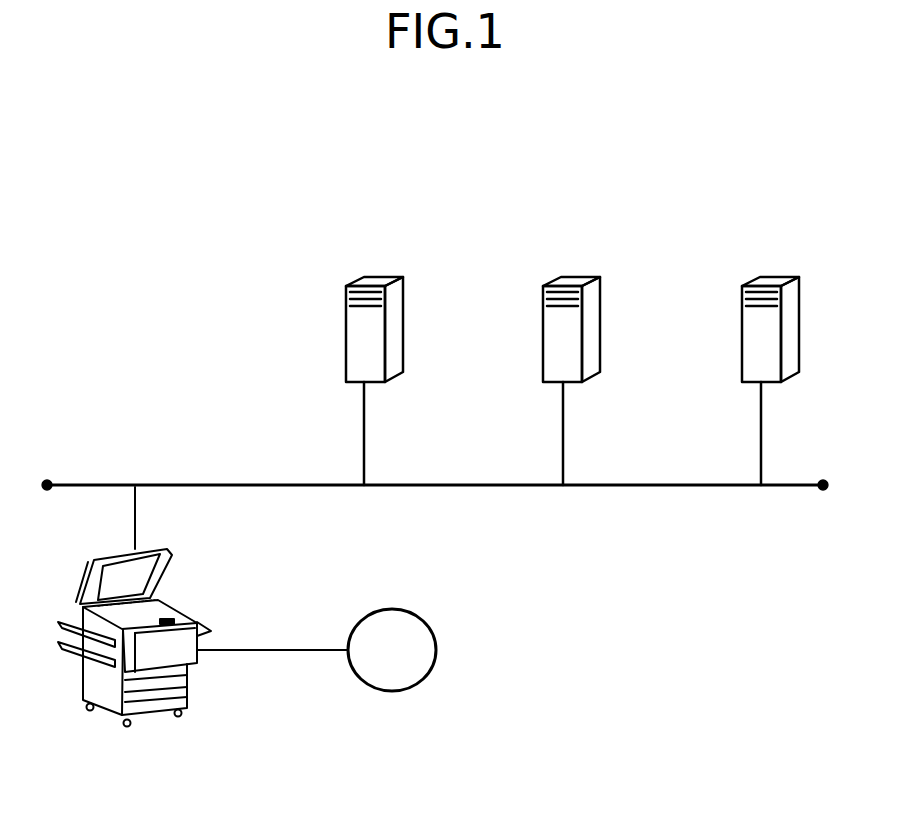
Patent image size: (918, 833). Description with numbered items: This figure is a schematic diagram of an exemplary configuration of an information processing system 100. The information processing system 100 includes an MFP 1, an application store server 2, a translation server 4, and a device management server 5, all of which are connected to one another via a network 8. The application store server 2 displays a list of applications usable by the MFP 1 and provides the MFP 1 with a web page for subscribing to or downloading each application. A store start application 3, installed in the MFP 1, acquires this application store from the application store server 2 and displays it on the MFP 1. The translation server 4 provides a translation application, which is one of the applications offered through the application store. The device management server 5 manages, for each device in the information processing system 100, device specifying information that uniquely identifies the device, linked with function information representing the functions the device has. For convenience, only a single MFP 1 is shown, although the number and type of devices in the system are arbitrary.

The information processing system 100 is at (264, 184).
The MFP 1 is at (188, 688).
The application store server 2 is at (380, 276).
The store start application 3 is at (437, 648).
The translation server 4 is at (579, 276).
The device management server 5 is at (777, 276).
The network 8 is at (241, 483).